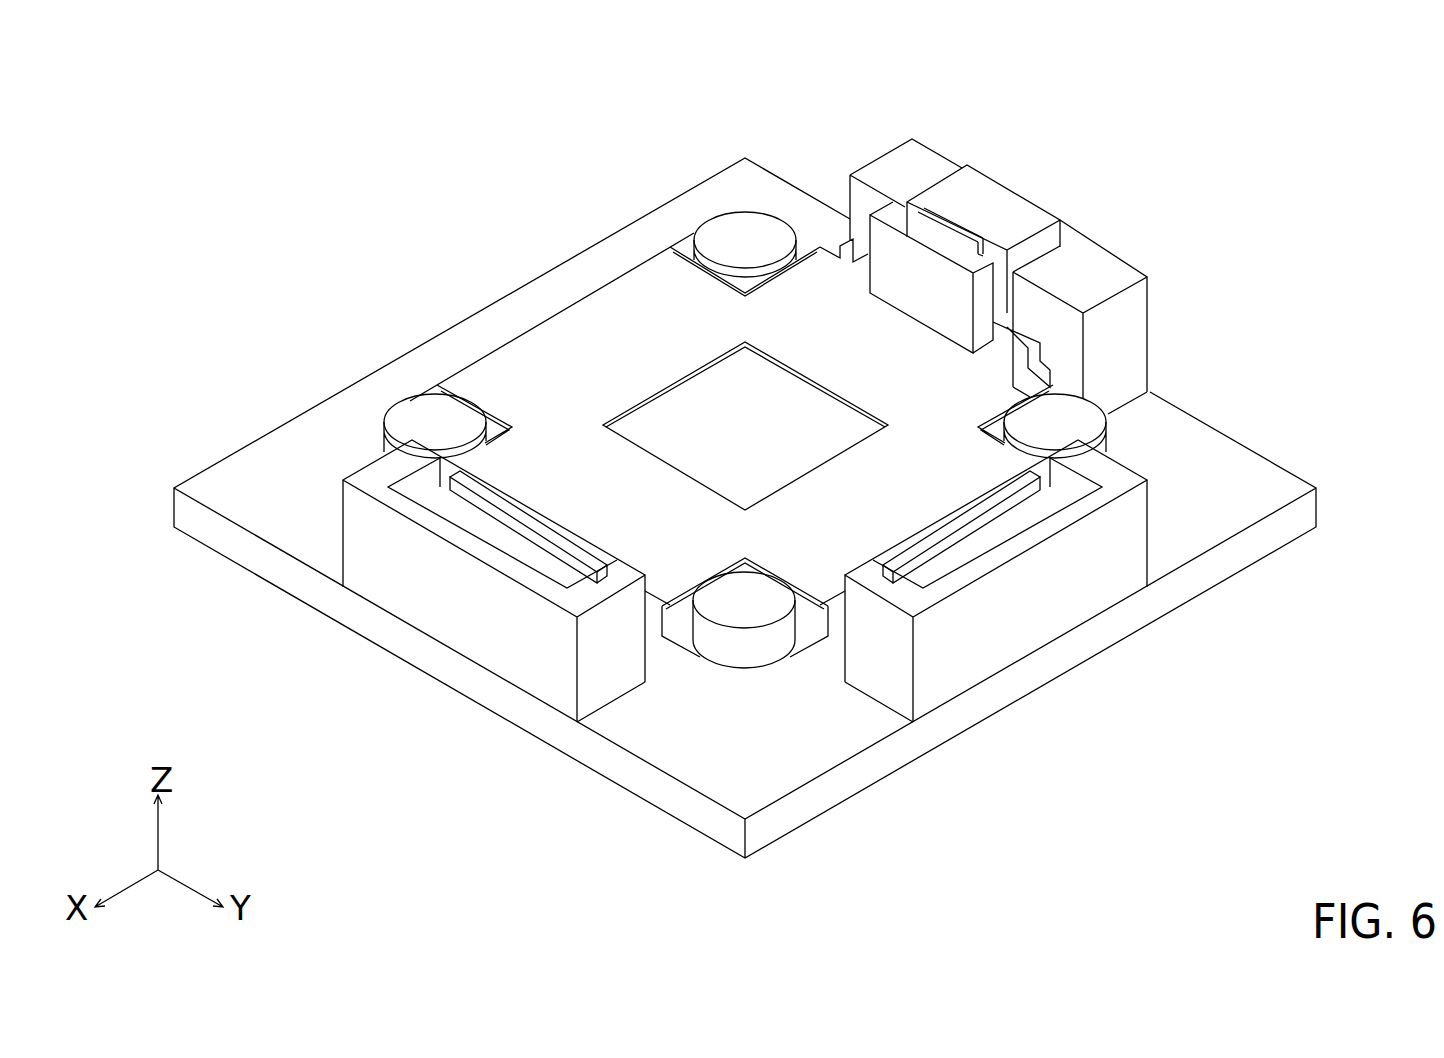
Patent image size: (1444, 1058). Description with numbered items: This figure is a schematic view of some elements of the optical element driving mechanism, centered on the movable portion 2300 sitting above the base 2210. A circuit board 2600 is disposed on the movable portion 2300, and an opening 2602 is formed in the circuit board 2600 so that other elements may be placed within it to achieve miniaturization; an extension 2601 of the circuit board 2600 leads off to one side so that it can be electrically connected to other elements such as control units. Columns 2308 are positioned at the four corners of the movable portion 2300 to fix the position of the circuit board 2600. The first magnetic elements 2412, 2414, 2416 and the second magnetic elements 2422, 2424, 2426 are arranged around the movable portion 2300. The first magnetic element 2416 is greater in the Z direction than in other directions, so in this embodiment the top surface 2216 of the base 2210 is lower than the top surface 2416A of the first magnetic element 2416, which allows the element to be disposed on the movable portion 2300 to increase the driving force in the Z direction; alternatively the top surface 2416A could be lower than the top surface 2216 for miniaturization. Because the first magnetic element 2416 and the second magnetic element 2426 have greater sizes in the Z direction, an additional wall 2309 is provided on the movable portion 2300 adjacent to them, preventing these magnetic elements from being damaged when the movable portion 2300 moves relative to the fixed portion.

The base 2210 is at (1319, 499).
The top surface of the base 2216 is at (1094, 270).
The movable portion 2300 is at (709, 668).
The columns 2308 is at (743, 243).
The wall 2309 is at (897, 265).
The first magnetic element 2412 is at (540, 563).
The first magnetic element 2414 is at (950, 563).
The first magnetic element 2416 is at (997, 210).
The top surface of the first magnetic element 2416A is at (971, 191).
The second magnetic element 2422 is at (497, 512).
The second magnetic element 2424 is at (993, 512).
The second magnetic element 2426 is at (963, 227).
The circuit board 2600 is at (471, 346).
The extension of the circuit board 2601 is at (688, 310).
The opening 2602 is at (720, 427).